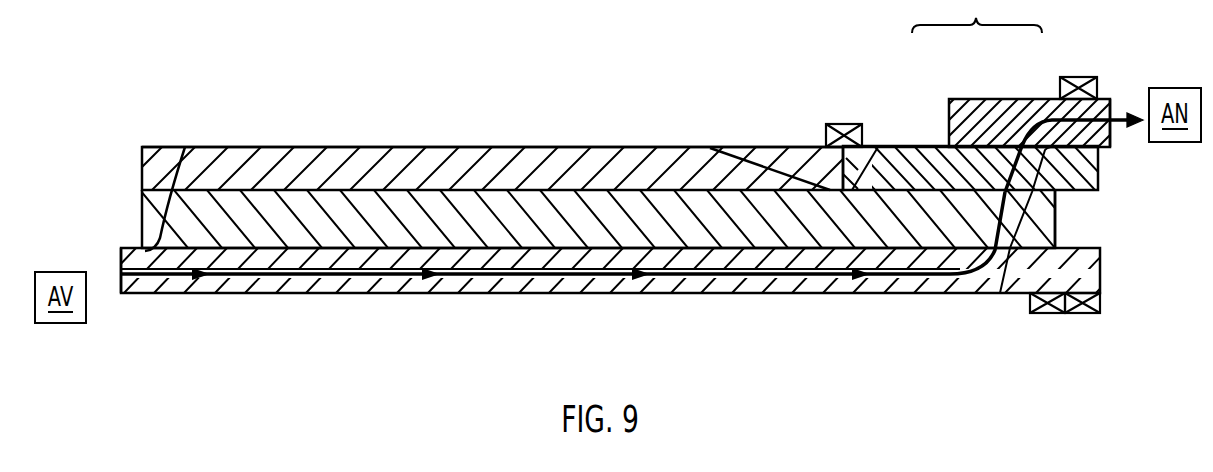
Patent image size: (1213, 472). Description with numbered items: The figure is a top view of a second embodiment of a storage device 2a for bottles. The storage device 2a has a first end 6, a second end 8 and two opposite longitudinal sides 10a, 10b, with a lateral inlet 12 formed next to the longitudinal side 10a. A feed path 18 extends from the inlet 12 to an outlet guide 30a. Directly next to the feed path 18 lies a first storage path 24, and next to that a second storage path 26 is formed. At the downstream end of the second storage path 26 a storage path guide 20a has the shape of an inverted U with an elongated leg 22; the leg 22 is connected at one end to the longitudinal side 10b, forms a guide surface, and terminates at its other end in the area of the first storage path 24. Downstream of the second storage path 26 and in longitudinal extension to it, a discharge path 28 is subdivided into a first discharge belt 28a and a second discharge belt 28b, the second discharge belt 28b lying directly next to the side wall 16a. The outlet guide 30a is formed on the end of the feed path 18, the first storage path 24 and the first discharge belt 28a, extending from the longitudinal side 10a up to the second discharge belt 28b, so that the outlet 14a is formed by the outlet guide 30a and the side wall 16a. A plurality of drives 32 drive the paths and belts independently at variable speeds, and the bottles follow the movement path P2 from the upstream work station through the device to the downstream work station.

The first end 6 is at (125, 140).
The second storage path 26 is at (352, 177).
The longitudinal side 10b is at (400, 147).
The storage device 2a is at (731, 118).
The leg 22 is at (765, 147).
The drives 32 is at (846, 124).
The storage path guide 20a is at (872, 147).
The first discharge belt 28a is at (933, 165).
The discharge path 28 is at (977, 16).
The side wall 16a is at (1005, 99).
The second discharge belt 28b is at (1013, 99).
The outlet 14a is at (1118, 103).
The second end 8 is at (1113, 197).
The inlet 12 is at (116, 291).
The movement path of the bottles P2 is at (170, 278).
The feed path 18 is at (265, 278).
The longitudinal side 10a is at (358, 294).
The first storage path 24 is at (610, 232).
The outlet guide 30a is at (997, 294).